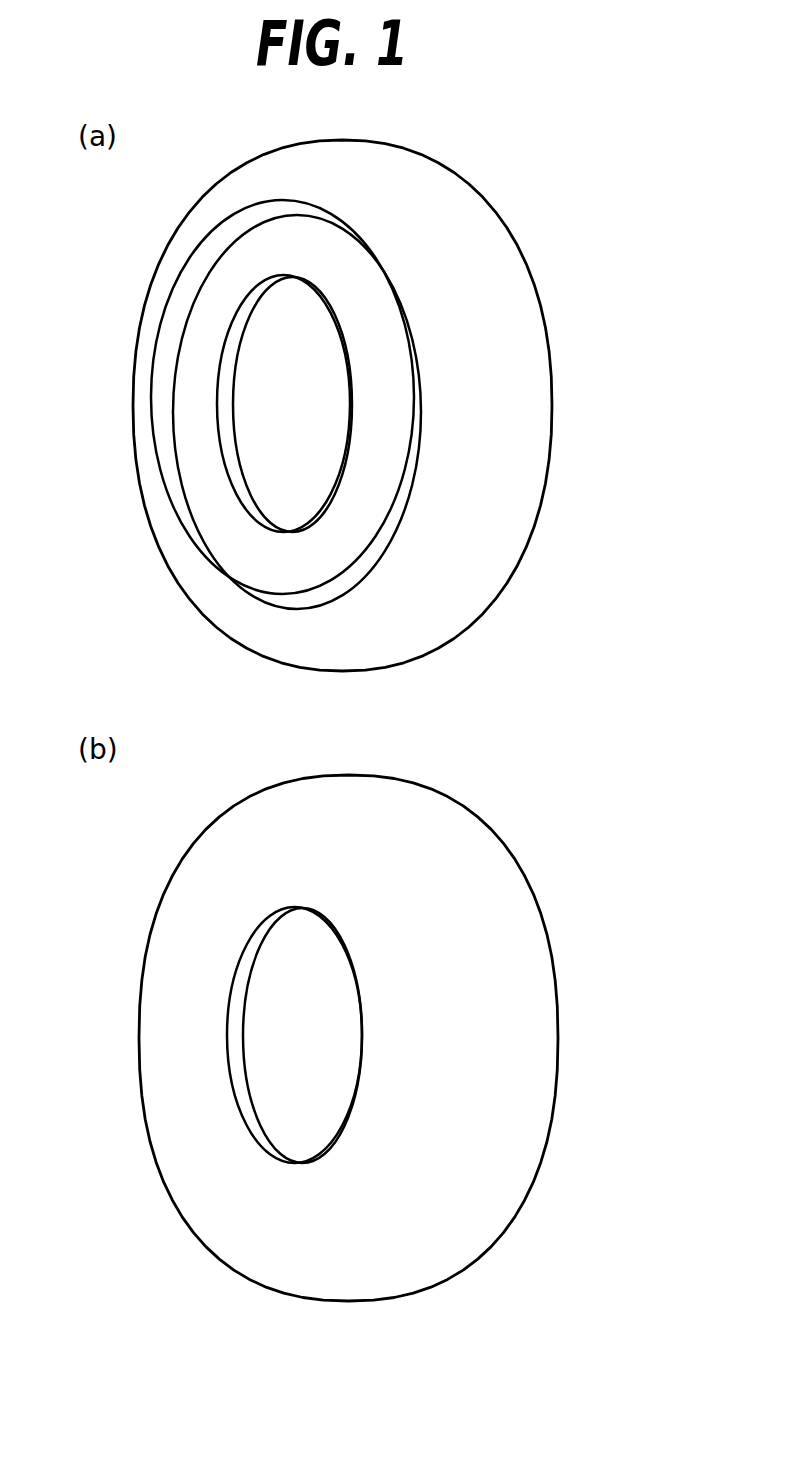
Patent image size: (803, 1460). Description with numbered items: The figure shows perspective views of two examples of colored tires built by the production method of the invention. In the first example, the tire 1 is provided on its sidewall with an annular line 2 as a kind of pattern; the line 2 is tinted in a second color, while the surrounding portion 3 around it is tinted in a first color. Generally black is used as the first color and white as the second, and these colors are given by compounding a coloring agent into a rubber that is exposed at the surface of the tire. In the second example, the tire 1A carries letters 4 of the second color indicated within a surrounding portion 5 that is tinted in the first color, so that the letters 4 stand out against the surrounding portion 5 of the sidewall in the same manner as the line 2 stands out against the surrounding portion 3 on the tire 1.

The tire 1 is at (482, 165).
The tire 1A is at (563, 972).
The annular line 2 is at (418, 358).
The surrounding portion 3 is at (500, 478).
The letters 4 is at (163, 1063).
The surrounding portion 5 is at (258, 1192).